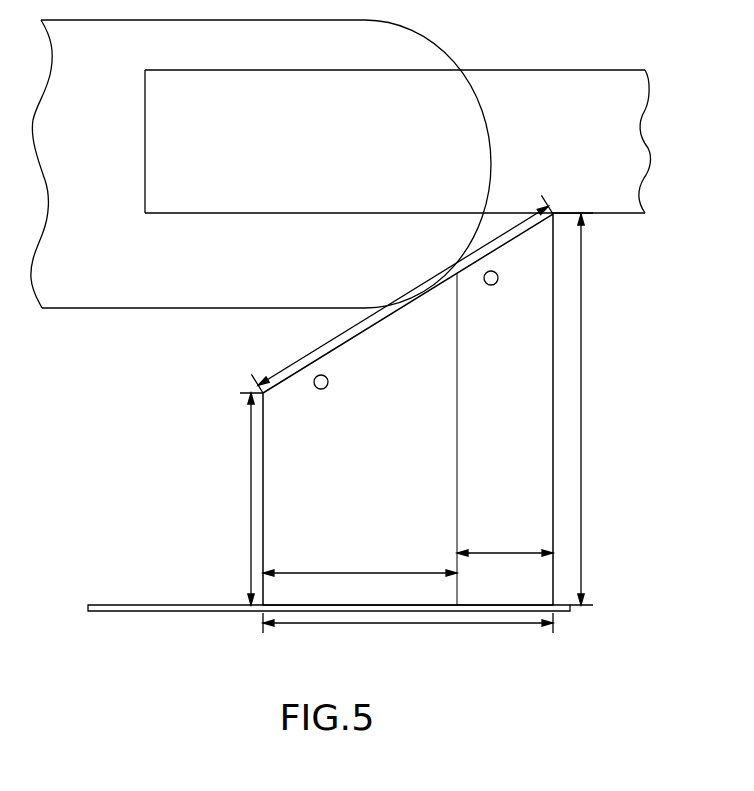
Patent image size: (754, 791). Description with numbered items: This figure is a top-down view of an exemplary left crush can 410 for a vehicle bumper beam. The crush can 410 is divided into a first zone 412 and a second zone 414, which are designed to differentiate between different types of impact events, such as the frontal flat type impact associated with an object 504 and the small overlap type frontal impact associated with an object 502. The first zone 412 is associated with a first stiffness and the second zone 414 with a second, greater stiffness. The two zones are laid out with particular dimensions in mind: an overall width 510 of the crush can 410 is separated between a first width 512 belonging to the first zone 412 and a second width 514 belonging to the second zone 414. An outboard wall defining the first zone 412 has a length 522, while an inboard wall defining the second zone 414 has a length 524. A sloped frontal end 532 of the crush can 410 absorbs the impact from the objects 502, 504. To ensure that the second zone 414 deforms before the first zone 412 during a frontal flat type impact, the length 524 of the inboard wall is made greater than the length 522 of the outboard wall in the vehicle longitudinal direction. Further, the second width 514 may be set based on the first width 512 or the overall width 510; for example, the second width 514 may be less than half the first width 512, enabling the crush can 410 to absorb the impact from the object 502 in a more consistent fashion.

The crush can 410 is at (638, 327).
The first zone 412 is at (343, 458).
The second zone 414 is at (486, 458).
The object 502 is at (128, 308).
The object 504 is at (647, 143).
The overall width 510 is at (402, 623).
The first width 512 is at (360, 573).
The second width 514 is at (503, 553).
The length of outboard wall 522 is at (250, 499).
The length of inboard wall 524 is at (581, 410).
The frontal end 532 is at (320, 355).